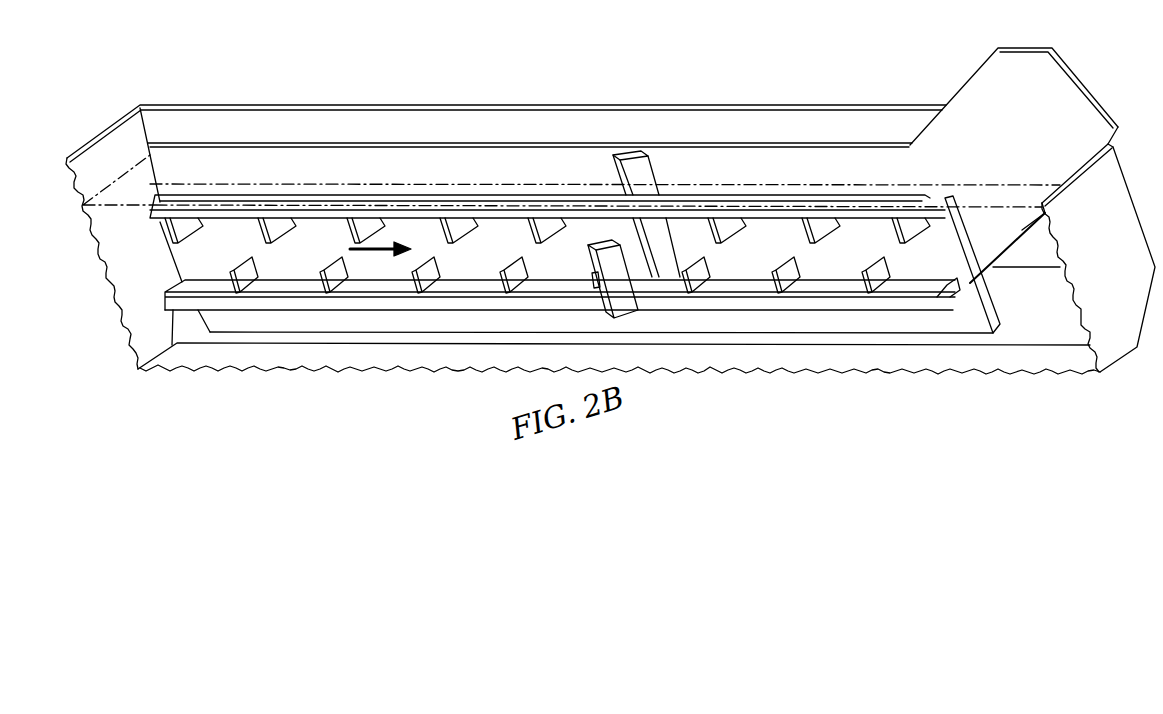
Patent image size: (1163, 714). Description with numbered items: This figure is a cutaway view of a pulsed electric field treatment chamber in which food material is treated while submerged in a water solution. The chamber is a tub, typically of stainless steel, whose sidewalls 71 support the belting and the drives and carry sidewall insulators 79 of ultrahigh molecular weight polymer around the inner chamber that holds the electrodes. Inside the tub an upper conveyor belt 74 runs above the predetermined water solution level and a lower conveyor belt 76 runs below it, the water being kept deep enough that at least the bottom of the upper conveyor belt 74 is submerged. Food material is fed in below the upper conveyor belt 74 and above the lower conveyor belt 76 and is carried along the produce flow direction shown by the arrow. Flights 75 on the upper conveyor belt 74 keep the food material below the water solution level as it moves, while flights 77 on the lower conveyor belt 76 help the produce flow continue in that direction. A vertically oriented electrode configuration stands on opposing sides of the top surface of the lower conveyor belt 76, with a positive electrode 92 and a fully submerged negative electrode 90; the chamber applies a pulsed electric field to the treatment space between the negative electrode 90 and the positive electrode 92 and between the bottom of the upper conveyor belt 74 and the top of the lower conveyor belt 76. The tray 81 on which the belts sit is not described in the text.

The sidewalls 71 is at (968, 80).
The upper conveyor belt 74 is at (217, 223).
The flights 75 is at (800, 237).
The lower conveyor belt 76 is at (298, 275).
The flights 77 is at (800, 269).
The sidewall insulators 79 is at (490, 158).
The tray 81 is at (932, 258).
The negative electrode 90 is at (590, 252).
The positive electrode 92 is at (612, 162).